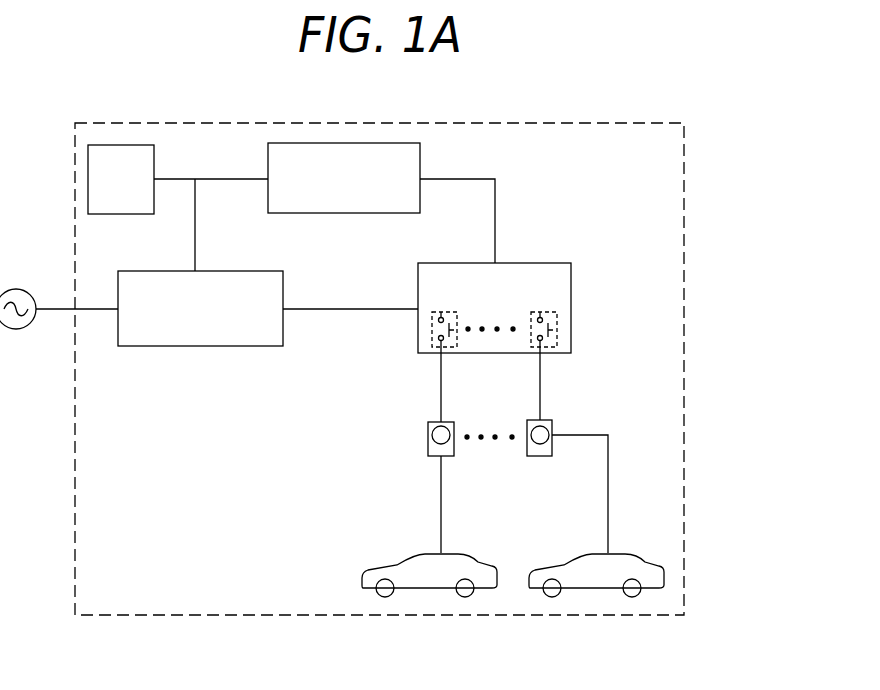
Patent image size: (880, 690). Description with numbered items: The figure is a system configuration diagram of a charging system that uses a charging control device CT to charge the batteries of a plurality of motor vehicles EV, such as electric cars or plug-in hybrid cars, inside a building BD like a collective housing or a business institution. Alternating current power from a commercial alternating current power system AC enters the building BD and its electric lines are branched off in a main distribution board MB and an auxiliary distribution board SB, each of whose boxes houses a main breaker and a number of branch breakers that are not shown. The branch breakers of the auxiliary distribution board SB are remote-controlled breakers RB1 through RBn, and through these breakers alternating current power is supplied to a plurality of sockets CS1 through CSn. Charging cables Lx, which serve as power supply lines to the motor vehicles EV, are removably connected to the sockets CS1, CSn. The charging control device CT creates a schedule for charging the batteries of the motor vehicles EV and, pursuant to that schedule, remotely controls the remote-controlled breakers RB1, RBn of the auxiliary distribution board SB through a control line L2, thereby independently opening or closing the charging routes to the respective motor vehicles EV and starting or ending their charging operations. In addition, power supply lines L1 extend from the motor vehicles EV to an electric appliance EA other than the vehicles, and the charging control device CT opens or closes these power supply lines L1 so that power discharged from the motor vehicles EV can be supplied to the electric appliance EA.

The building BD is at (684, 153).
The commercial alternating current power system AC is at (59, 293).
The electric appliance EA is at (121, 179).
The power supply lines L1 is at (232, 180).
The charging control device CT is at (421, 158).
The control line L2 is at (496, 215).
The main distribution board MB is at (200, 347).
The auxiliary distribution board SB is at (571, 274).
The remote-controlled breaker RB1 is at (430, 324).
The remote-controlled breaker RBn is at (557, 322).
The socket CS1 is at (428, 442).
The socket CSn is at (552, 425).
The charging cables Lx is at (441, 495).
The motor vehicles EV is at (415, 565).